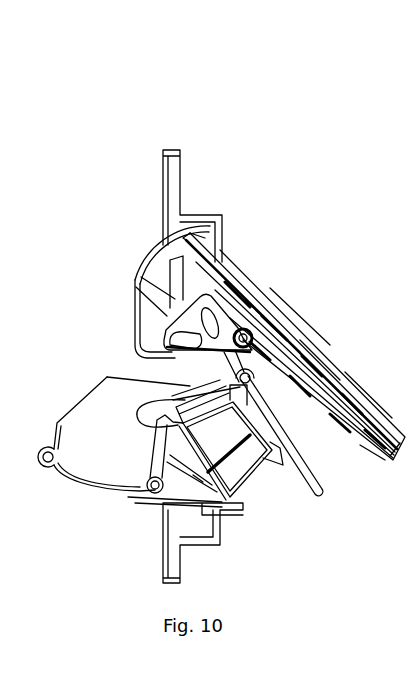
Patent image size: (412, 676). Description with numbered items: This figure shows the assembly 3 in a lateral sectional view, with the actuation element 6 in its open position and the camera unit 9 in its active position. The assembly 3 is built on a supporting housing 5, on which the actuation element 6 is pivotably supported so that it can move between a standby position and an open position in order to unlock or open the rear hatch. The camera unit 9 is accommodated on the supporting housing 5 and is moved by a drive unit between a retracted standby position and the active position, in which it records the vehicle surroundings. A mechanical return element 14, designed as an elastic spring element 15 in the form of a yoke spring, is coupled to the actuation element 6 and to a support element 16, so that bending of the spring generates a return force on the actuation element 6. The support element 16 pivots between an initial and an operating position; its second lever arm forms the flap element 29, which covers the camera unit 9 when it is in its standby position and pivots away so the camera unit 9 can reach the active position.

The assembly 3 is at (192, 106).
The supporting housing 5 is at (165, 180).
The actuation element 6 is at (322, 352).
The camera unit 9 is at (172, 488).
The mechanical return element 14 is at (282, 380).
The elastic spring element 15 is at (257, 345).
The support element 16 is at (167, 332).
The flap element 29 is at (312, 483).